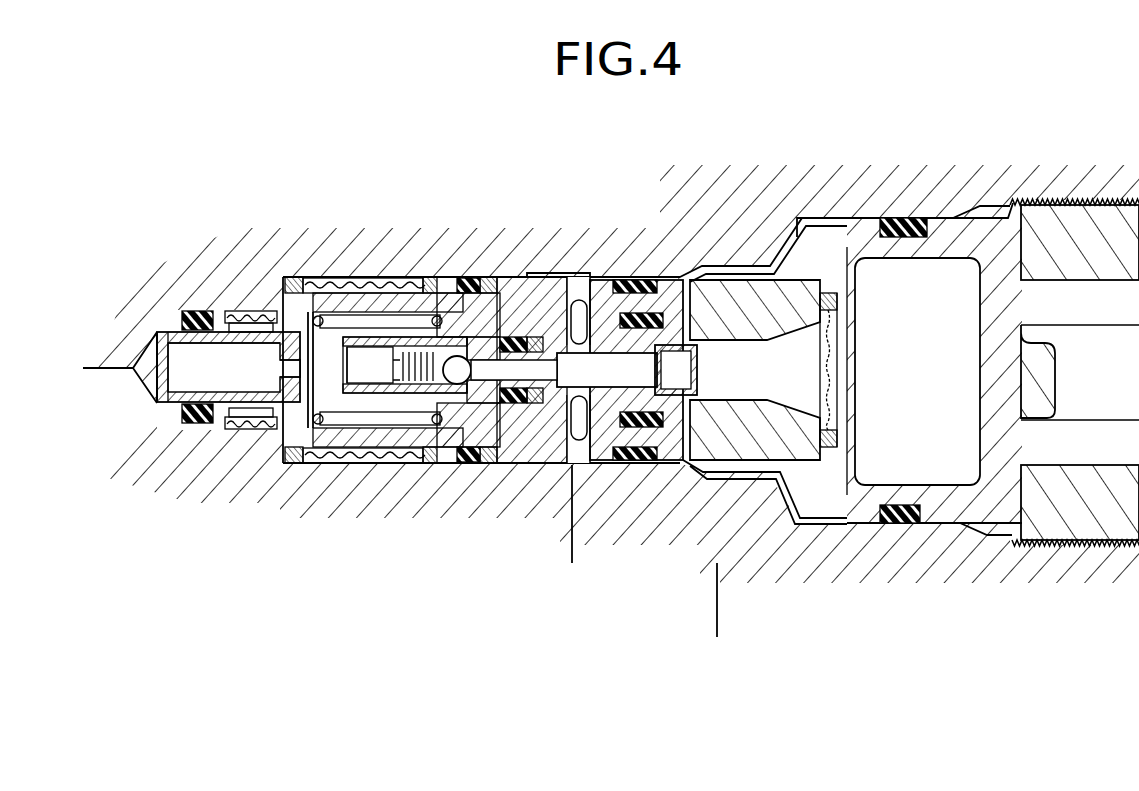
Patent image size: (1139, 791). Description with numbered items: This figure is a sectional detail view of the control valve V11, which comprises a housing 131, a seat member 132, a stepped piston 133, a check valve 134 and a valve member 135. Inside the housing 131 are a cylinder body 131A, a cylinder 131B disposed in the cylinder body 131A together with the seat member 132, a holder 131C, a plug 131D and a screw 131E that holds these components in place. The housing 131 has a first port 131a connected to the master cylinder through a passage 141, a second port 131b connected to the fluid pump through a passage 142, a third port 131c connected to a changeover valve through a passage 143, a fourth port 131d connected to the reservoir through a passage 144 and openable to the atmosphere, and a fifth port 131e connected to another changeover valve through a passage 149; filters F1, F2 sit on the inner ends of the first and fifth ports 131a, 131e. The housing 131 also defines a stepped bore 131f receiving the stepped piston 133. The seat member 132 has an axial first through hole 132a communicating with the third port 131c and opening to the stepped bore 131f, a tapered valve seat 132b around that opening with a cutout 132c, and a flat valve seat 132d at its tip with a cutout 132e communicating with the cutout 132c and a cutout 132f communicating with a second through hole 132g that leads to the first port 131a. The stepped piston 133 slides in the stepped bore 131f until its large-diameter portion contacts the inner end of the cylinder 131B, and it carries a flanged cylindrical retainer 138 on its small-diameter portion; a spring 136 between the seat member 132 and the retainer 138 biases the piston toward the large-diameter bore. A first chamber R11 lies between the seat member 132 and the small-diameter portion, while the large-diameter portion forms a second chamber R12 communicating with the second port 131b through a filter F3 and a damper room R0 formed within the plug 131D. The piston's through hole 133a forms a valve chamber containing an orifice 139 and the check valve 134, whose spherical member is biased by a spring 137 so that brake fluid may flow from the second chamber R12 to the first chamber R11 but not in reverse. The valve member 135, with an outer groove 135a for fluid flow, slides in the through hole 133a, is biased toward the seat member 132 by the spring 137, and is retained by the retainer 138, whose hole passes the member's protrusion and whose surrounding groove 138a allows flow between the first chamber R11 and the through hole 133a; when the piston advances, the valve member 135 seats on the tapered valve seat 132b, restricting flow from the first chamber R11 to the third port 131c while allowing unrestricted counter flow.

The housing 131 is at (853, 197).
The first port 131a is at (250, 307).
The second port 131b is at (770, 540).
The third port 131c is at (143, 423).
The fourth port 131d is at (580, 466).
The fifth port 131e is at (378, 275).
The stepped bore 131f is at (527, 441).
The cylinder body 131A is at (607, 245).
The cylinder 131B is at (511, 287).
The holder 131C is at (720, 297).
The plug 131D is at (937, 227).
The screw 131E is at (1077, 217).
The seat member 132 is at (160, 420).
The first through hole 132a is at (153, 333).
The tapered valve seat 132b is at (280, 350).
The cutout 132c is at (293, 377).
The flat valve seat 132d is at (340, 462).
The cutout 132e is at (295, 463).
The cutout 132f is at (292, 285).
The second through hole 132g is at (252, 310).
The stepped piston 133 is at (622, 464).
The through hole 133a is at (540, 285).
The check valve 134 is at (493, 441).
The valve member 135 is at (427, 441).
The groove 135a is at (385, 441).
The spring 136 is at (460, 441).
The spring 137 is at (459, 285).
The cylindrical retainer 138 is at (316, 305).
The groove 138a is at (350, 332).
The orifice 139 is at (673, 367).
The passage 141 is at (250, 260).
The passage 142 is at (717, 607).
The passage 143 is at (93, 370).
The passage 144 is at (572, 552).
The passage 149 is at (375, 277).
The first chamber R11 is at (312, 318).
The second chamber R12 is at (766, 381).
The damper room R0 is at (935, 426).
The filter F1 is at (238, 416).
The filter F2 is at (332, 455).
The filter F3 is at (830, 337).
The control valve V11 is at (651, 213).